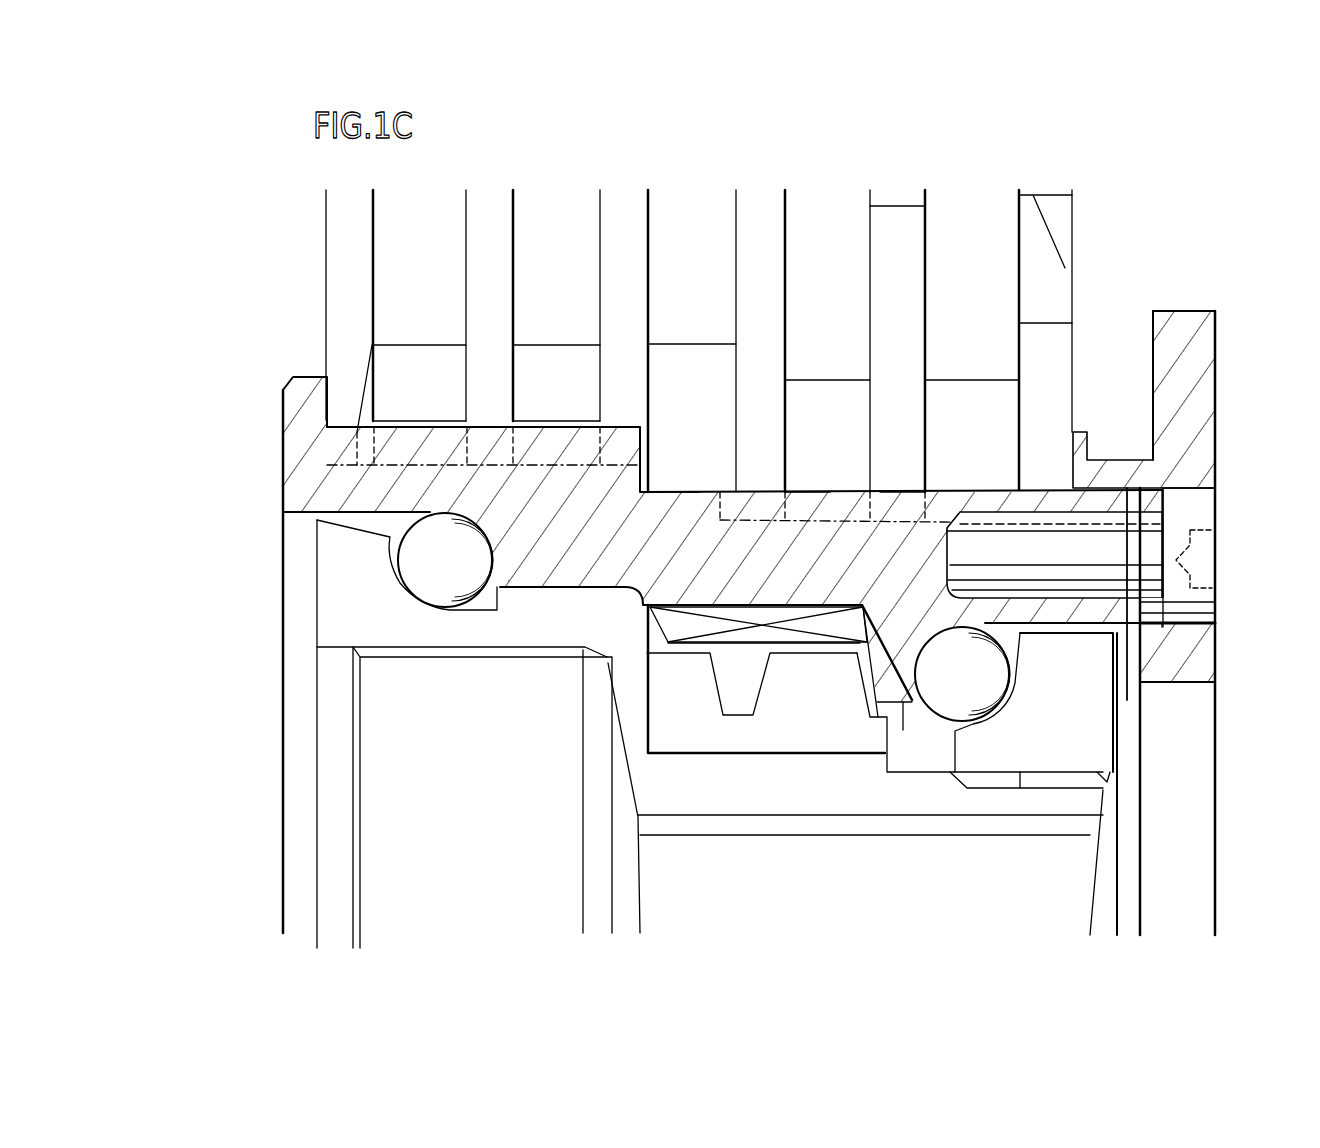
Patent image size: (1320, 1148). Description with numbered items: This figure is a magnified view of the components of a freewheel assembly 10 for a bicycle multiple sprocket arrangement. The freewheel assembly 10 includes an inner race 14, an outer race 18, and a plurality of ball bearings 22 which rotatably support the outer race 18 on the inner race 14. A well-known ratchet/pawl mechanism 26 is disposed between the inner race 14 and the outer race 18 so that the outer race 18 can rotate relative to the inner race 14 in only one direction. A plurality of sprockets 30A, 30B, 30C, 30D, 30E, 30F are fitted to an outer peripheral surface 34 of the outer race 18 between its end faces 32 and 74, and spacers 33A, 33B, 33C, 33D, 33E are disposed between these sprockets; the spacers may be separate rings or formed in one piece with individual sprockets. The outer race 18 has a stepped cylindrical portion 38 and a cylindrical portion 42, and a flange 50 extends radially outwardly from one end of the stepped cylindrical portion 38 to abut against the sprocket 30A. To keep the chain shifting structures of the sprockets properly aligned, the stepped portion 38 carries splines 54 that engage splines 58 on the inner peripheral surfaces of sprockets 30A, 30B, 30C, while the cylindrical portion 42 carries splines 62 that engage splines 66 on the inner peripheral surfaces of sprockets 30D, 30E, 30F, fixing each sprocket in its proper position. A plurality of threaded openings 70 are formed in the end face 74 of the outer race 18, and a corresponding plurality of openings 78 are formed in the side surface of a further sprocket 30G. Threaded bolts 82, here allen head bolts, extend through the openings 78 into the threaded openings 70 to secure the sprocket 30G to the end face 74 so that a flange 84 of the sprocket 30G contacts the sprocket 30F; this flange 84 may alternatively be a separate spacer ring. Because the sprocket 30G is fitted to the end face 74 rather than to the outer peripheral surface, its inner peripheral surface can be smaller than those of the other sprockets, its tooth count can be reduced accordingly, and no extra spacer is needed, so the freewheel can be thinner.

The freewheel assembly 10 is at (184, 271).
The inner race 14 is at (362, 604).
The outer race 18 is at (538, 543).
The ball bearings 22 is at (462, 574).
The ratchet/pawl mechanism 26 is at (759, 767).
The sprocket 30A is at (333, 274).
The sprocket 30B is at (477, 253).
The sprocket 30C is at (608, 253).
The sprocket 30D is at (740, 252).
The sprocket 30E is at (878, 251).
The sprocket 30F is at (1013, 251).
The sprocket 30G is at (1186, 310).
The end face 32 is at (327, 400).
The spacer 33A is at (445, 394).
The spacer 33B is at (580, 394).
The spacer 33C is at (720, 384).
The spacer 33D is at (862, 444).
The spacer 33E is at (1000, 439).
The outer peripheral surface 34 is at (668, 490).
The stepped cylindrical portion 38 is at (338, 517).
The cylindrical portion 42 is at (775, 560).
The flange 50 is at (293, 418).
The splines 54 is at (377, 347).
The splines 58 is at (493, 443).
The splines 62 is at (903, 500).
The splines 66 is at (805, 497).
The threaded openings 70 is at (1010, 520).
The end face 74 is at (1155, 618).
The openings 78 is at (1220, 617).
The bolts 82 is at (1209, 517).
The flange 84 is at (1122, 460).